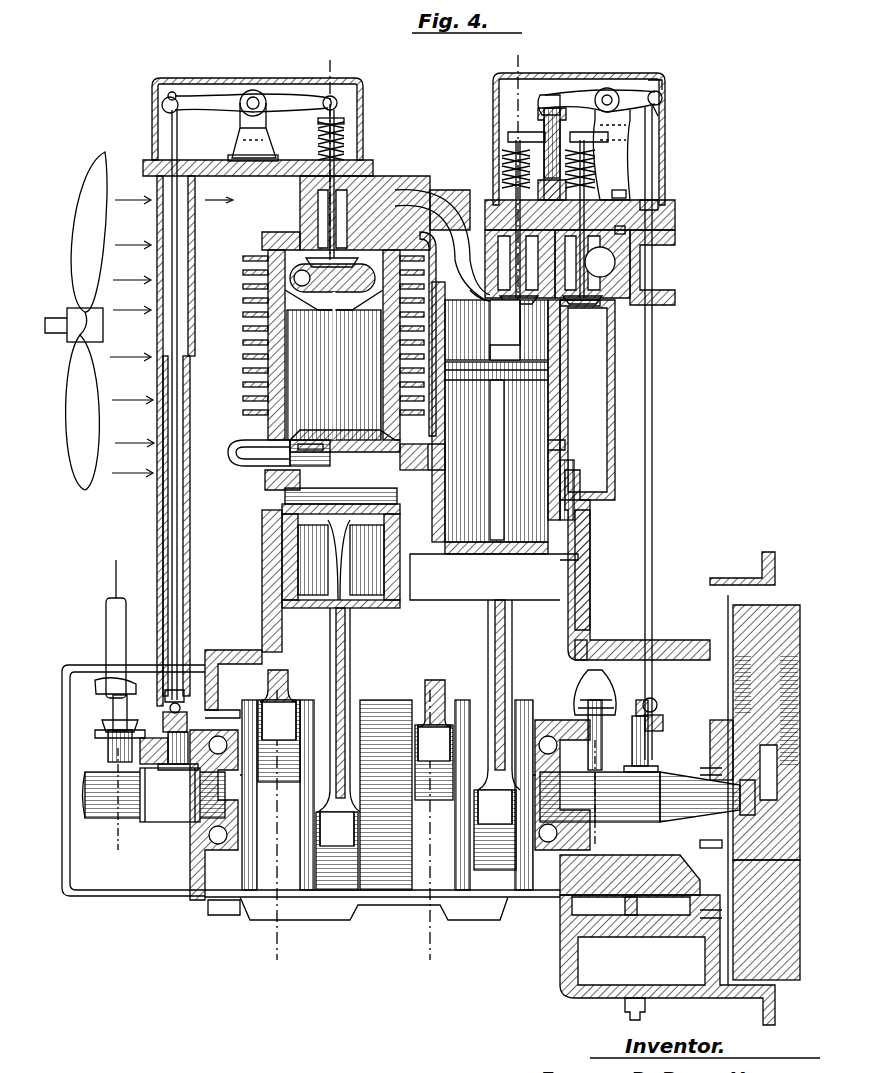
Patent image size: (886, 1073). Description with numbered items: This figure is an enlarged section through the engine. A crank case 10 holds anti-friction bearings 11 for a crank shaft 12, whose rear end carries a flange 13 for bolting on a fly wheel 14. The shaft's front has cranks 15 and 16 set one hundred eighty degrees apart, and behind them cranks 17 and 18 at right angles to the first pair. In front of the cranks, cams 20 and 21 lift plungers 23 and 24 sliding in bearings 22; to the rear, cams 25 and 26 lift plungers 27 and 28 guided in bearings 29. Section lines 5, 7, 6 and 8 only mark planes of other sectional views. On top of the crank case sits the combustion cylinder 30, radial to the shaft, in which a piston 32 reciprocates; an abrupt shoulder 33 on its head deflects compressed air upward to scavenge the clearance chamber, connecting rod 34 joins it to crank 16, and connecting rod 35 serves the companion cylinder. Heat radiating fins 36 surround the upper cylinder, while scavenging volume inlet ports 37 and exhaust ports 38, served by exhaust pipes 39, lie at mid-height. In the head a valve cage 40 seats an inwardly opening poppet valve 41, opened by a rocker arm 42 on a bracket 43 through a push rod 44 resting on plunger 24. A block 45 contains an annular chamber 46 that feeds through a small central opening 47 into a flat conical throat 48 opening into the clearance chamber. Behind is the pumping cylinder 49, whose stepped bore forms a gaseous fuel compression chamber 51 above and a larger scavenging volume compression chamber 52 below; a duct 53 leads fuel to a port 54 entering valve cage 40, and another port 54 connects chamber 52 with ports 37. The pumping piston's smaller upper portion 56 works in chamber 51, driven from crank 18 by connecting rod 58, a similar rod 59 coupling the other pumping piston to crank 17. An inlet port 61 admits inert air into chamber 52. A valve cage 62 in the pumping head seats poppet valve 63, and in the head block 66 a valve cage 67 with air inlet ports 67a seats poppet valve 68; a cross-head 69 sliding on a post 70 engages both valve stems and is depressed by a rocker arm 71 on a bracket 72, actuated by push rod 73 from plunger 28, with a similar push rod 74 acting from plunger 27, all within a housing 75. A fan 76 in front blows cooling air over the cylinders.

The section line 5 is at (305, 60).
The section line 7 is at (490, 57).
The section line 6 is at (116, 756).
The section line 8 is at (600, 750).
The crank case 10 is at (228, 652).
The bearings 11 is at (205, 855).
The crank shaft 12 is at (222, 795).
The flange 13 is at (735, 765).
The fly wheel 14 is at (770, 886).
The crank 15 is at (279, 741).
The crank 16 is at (337, 851).
The crank 17 is at (434, 762).
The crank 18 is at (495, 830).
The cam 20 is at (112, 805).
The cam 21 is at (185, 790).
The bearings 22 is at (170, 720).
The plunger 23 is at (112, 738).
The plunger 24 is at (176, 762).
The cam 25 is at (600, 796).
The cam 26 is at (660, 778).
The plunger 27 is at (636, 716).
The plunger 28 is at (654, 706).
The bearings 29 is at (645, 700).
The combustion cylinder 30 is at (270, 485).
The piston 32 is at (296, 540).
The abrupt shoulder 33 is at (378, 442).
The connecting rod 34 is at (346, 652).
The connecting rod 35 is at (280, 690).
The heat radiating fins 36 is at (250, 258).
The scavenging volume inlet ports 37 is at (398, 452).
The exhaust ports 38 is at (306, 440).
The exhaust pipes 39 is at (248, 456).
The valve cage 40 is at (300, 209).
The poppet valve 41 is at (378, 213).
The rocker arm 42 is at (292, 98).
The bracket 43 is at (250, 140).
The push rod 44 is at (172, 490).
The block 45 is at (282, 305).
The annular chamber 46 is at (395, 255).
The centrally arranged opening 47 is at (250, 380).
The conical throat 48 is at (352, 295).
The pumping cylinder 49 is at (582, 496).
The gaseous fuel compression chamber 51 is at (522, 316).
The scavenging volume compression chamber 52 is at (556, 465).
The duct 53 is at (436, 215).
The port 54 is at (362, 283).
The pumping piston upper portion 56 is at (522, 398).
The connecting rod 58 is at (498, 658).
The connecting rod 59 is at (472, 668).
The inlet port 61 is at (556, 470).
The valve cage 62 is at (505, 244).
The poppet valve 63 is at (500, 300).
The head block 66 is at (618, 222).
The valve cage 67 is at (606, 278).
The air inlet ports 67a is at (604, 262).
The poppet valve 68 is at (590, 306).
The cross-head 69 is at (582, 126).
The post 70 is at (526, 134).
The rocker arm 71 is at (626, 92).
The bracket 72 is at (626, 155).
The push rod 73 is at (652, 495).
The push rod 74 is at (590, 692).
The housing 75 is at (663, 96).
The fan 76 is at (108, 152).